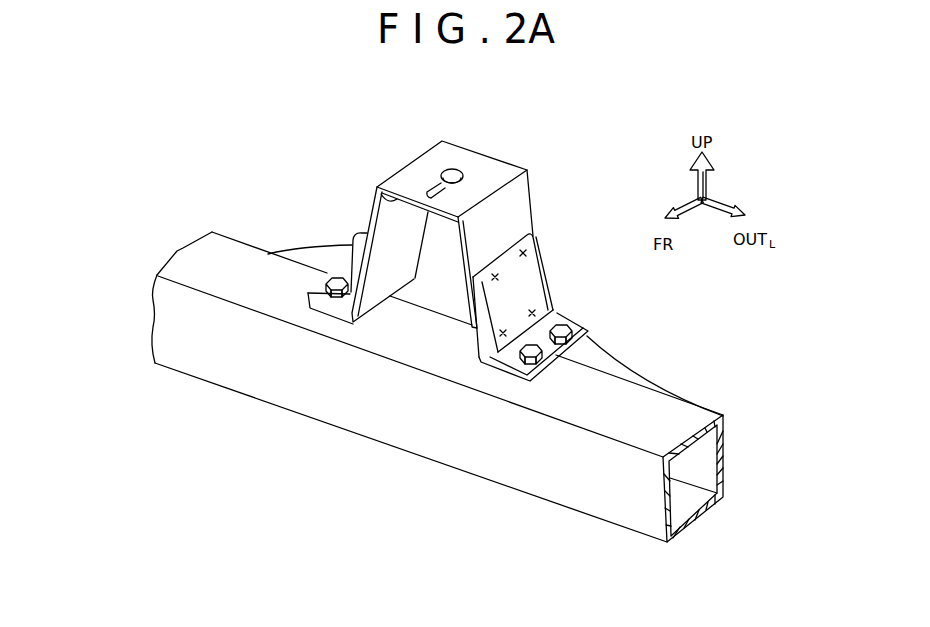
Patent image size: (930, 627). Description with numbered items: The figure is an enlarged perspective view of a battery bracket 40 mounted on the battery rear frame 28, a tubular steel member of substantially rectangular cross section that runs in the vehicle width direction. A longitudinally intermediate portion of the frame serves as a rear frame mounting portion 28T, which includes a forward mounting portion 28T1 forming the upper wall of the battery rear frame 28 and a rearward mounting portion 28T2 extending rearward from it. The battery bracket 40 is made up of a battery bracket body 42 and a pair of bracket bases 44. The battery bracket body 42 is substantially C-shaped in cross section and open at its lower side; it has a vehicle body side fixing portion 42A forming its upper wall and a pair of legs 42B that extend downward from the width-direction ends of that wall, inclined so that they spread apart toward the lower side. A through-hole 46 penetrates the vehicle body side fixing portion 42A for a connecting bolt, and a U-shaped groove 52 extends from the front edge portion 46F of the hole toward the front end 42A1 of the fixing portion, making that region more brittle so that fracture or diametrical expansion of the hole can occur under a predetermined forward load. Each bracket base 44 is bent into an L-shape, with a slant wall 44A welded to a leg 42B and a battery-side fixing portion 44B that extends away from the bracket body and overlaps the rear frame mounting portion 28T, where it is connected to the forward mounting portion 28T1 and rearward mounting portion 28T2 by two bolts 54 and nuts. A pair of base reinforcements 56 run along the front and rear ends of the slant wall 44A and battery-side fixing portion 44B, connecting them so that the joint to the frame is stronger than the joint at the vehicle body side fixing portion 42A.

The battery rear frame 28 is at (592, 495).
The rear frame mounting portion 28T is at (731, 338).
The forward mounting portion 28T1 is at (580, 390).
The rearward mounting portion 28T2 is at (610, 362).
The battery bracket 40 is at (597, 203).
The battery bracket body 42 is at (443, 202).
The vehicle body side fixing portion 42A is at (497, 177).
The front end 42A1 is at (377, 185).
The leg 42B is at (530, 197).
The bracket base 44 is at (455, 296).
The slant wall 44A is at (527, 280).
The battery-side fixing portion 44B is at (540, 335).
The through-hole 46 is at (452, 170).
The front edge portion 46F is at (462, 172).
The groove 52 is at (437, 185).
The bolt 54 is at (587, 323).
The base reinforcement 56 is at (566, 322).